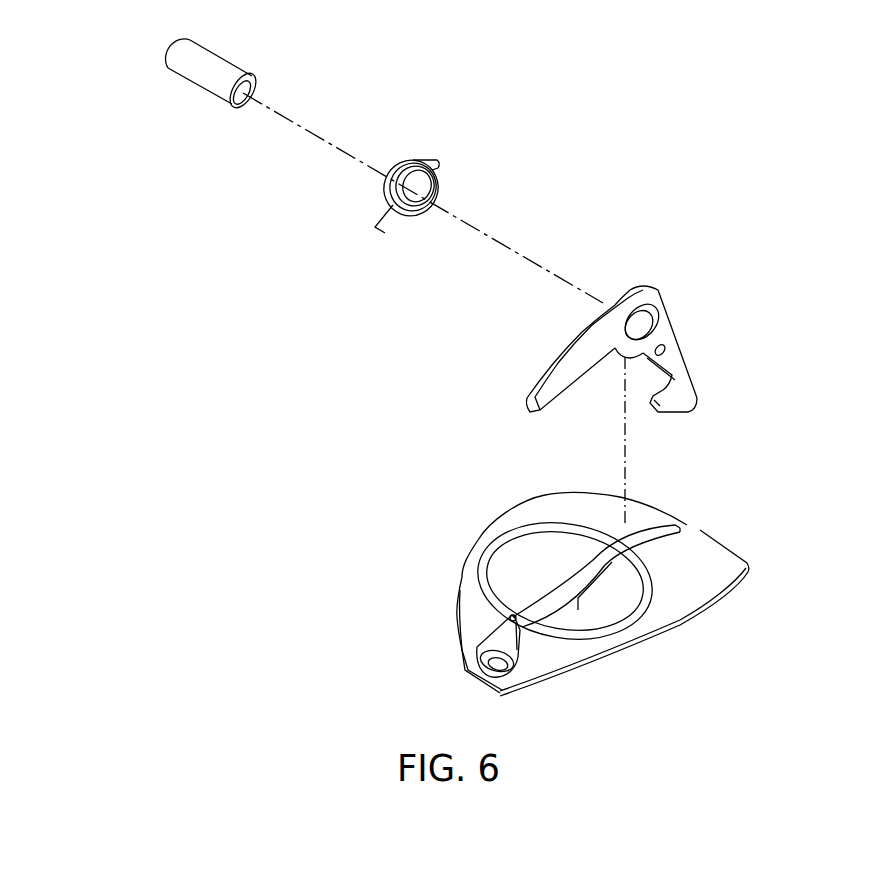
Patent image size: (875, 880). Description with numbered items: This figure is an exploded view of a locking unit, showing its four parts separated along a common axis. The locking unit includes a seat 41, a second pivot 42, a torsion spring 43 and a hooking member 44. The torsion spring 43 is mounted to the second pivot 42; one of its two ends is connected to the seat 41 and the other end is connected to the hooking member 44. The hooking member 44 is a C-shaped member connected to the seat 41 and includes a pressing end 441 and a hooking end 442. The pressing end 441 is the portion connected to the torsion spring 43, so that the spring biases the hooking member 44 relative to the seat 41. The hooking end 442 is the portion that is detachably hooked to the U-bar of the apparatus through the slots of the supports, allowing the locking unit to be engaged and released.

The seat 41 is at (745, 565).
The second pivot 42 is at (202, 92).
The torsion spring 43 is at (413, 160).
The hooking member 44 is at (653, 285).
The pressing end 441 is at (557, 375).
The hooking end 442 is at (685, 397).